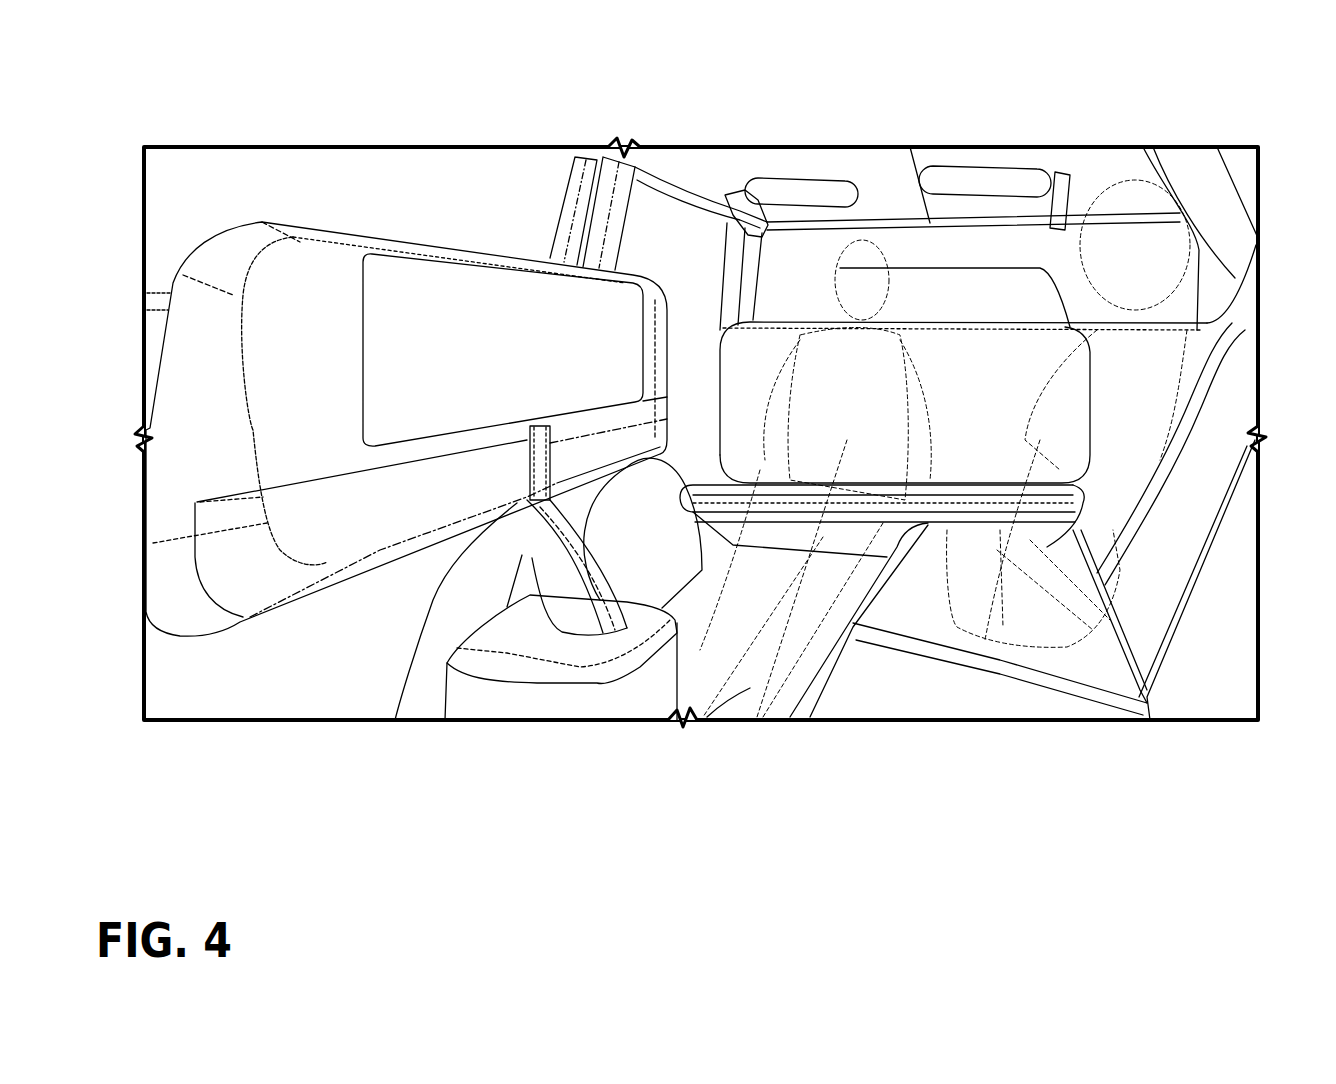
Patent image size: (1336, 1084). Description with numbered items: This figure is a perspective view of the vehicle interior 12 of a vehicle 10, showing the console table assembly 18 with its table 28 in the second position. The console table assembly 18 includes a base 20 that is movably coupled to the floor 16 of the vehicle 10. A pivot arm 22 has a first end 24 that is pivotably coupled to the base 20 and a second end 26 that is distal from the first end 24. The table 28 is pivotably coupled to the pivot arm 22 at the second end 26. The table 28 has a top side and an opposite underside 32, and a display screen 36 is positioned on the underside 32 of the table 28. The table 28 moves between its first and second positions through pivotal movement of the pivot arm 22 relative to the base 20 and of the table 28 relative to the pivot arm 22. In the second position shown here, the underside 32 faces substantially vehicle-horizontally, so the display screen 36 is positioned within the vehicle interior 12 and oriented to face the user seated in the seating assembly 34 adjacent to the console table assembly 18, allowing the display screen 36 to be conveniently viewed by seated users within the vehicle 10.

The vehicle 10 is at (577, 144).
The vehicle interior 12 is at (408, 212).
The floor 16 is at (718, 720).
The console table assembly 18 is at (291, 268).
The base 20 is at (487, 688).
The pivot arm 22 is at (539, 640).
The first end 24 is at (583, 653).
The second end 26 is at (570, 592).
The table 28 is at (288, 368).
The underside 32 is at (327, 540).
The seating assembly 34 is at (1200, 607).
The display screen 36 is at (460, 300).